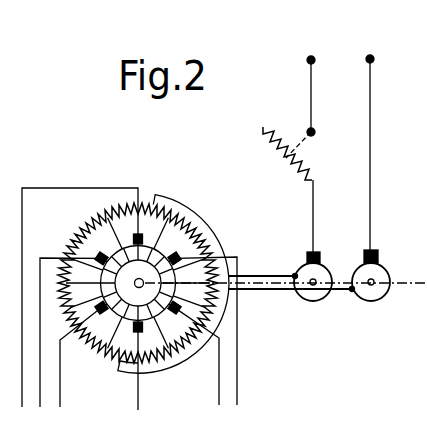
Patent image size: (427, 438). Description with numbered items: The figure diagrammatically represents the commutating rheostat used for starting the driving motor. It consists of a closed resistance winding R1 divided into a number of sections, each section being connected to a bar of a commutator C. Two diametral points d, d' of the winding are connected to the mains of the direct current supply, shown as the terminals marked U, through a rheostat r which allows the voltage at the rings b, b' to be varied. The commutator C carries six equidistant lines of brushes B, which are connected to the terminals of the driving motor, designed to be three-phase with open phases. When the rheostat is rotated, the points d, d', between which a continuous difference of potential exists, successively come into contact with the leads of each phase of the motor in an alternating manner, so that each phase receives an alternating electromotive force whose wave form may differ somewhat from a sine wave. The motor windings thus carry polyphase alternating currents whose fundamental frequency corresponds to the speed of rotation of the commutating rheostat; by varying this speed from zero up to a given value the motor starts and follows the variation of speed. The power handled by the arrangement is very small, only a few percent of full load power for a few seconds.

The commutator C is at (138, 283).
The diametral point of the winding d is at (138, 271).
The diametral point of the winding d' is at (117, 386).
The brushes B is at (180, 252).
The closed resistance winding R1 is at (129, 299).
The ring b is at (313, 259).
The ring b' is at (371, 197).
The rheostat r is at (289, 151).
The supply voltage terminals U is at (373, 45).